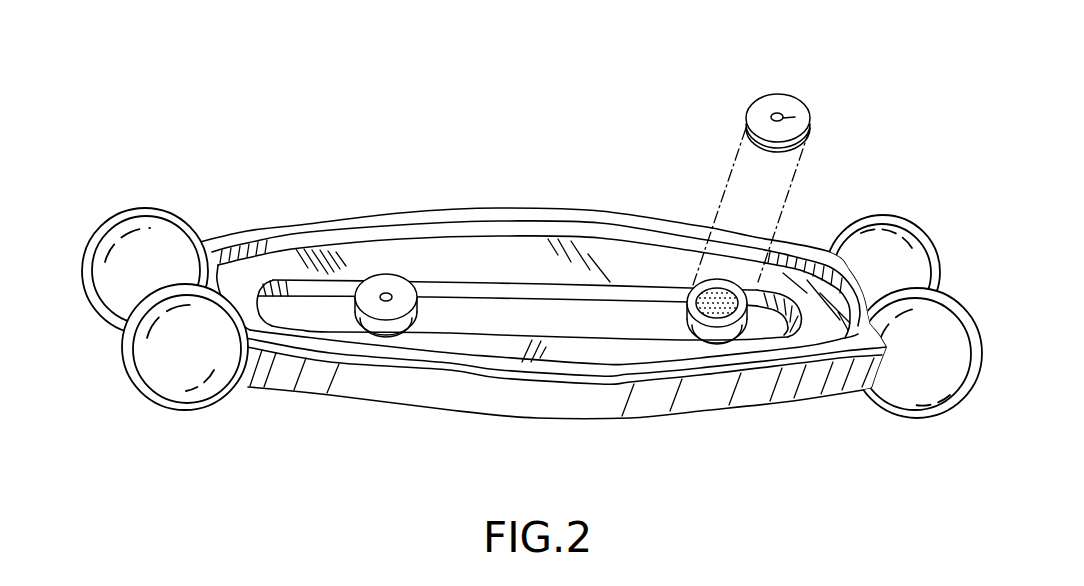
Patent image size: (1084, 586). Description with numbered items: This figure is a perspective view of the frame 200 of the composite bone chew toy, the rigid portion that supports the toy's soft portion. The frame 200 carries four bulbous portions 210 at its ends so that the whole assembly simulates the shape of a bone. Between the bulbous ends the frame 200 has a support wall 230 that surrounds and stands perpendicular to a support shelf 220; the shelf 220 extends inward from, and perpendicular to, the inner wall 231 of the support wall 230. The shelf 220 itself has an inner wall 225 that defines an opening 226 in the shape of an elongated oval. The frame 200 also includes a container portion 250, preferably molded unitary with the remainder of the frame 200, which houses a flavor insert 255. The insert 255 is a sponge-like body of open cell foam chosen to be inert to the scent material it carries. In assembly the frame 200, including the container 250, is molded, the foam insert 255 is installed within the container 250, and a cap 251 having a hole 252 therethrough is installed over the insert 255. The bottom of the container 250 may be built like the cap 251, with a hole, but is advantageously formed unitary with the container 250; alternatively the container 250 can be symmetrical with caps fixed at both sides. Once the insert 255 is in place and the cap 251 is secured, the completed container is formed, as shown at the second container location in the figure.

The frame 200 is at (543, 282).
The bulbous portions 210 is at (903, 240).
The support shelf 220 is at (450, 252).
The inner wall 225 is at (558, 293).
The opening 226 is at (492, 326).
The support wall 230 is at (318, 228).
The inner wall of support wall 231 is at (270, 242).
The container portion 250 is at (688, 311).
The cap 251 is at (611, 171).
The hole 252 is at (808, 112).
The flavor insert 255 is at (713, 303).